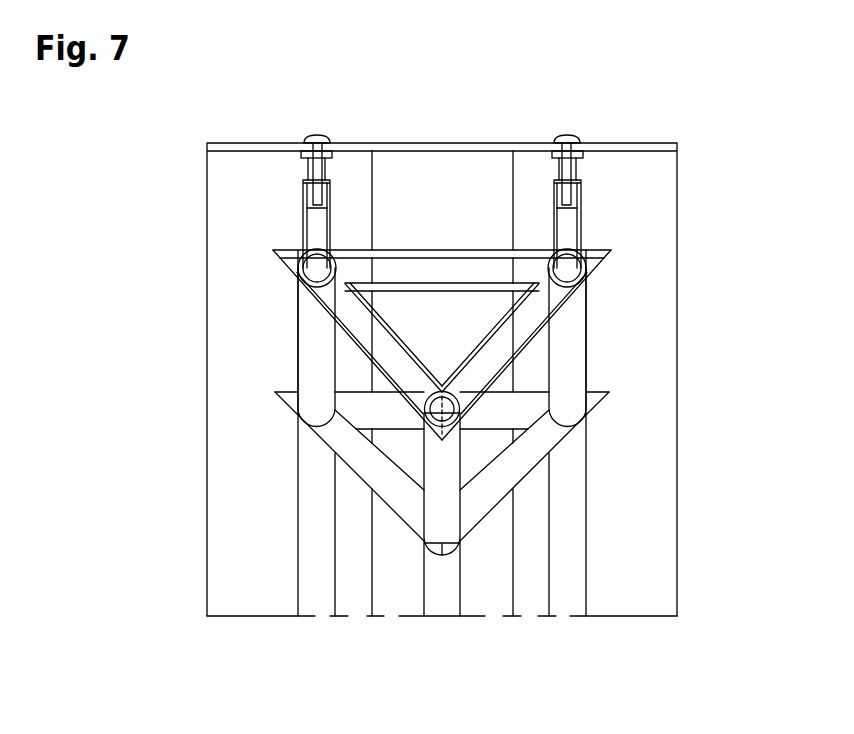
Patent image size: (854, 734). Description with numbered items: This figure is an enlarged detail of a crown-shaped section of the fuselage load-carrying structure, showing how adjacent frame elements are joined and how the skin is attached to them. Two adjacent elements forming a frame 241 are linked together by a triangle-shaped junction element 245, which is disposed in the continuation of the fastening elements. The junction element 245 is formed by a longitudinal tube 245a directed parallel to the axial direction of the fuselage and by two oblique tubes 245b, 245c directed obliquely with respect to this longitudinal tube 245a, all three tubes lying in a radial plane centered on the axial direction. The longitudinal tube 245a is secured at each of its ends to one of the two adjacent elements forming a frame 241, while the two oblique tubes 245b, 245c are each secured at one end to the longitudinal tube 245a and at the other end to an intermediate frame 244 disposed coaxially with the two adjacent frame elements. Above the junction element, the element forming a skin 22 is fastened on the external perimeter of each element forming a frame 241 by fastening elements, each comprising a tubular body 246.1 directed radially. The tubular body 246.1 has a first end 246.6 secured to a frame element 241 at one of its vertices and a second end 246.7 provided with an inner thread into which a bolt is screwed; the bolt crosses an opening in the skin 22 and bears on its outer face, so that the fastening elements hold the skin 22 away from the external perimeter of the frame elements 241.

The element forming a skin 22 is at (622, 143).
The element forming a frame 241 is at (305, 490).
The intermediate frame 244 is at (424, 575).
The junction element 245 is at (444, 269).
The longitudinal tube 245a is at (468, 249).
The oblique tube 245b is at (532, 347).
The oblique tube 245c is at (355, 340).
The tubular body 246.1 is at (582, 226).
The first end 246.6 is at (587, 281).
The second end 246.7 is at (582, 195).